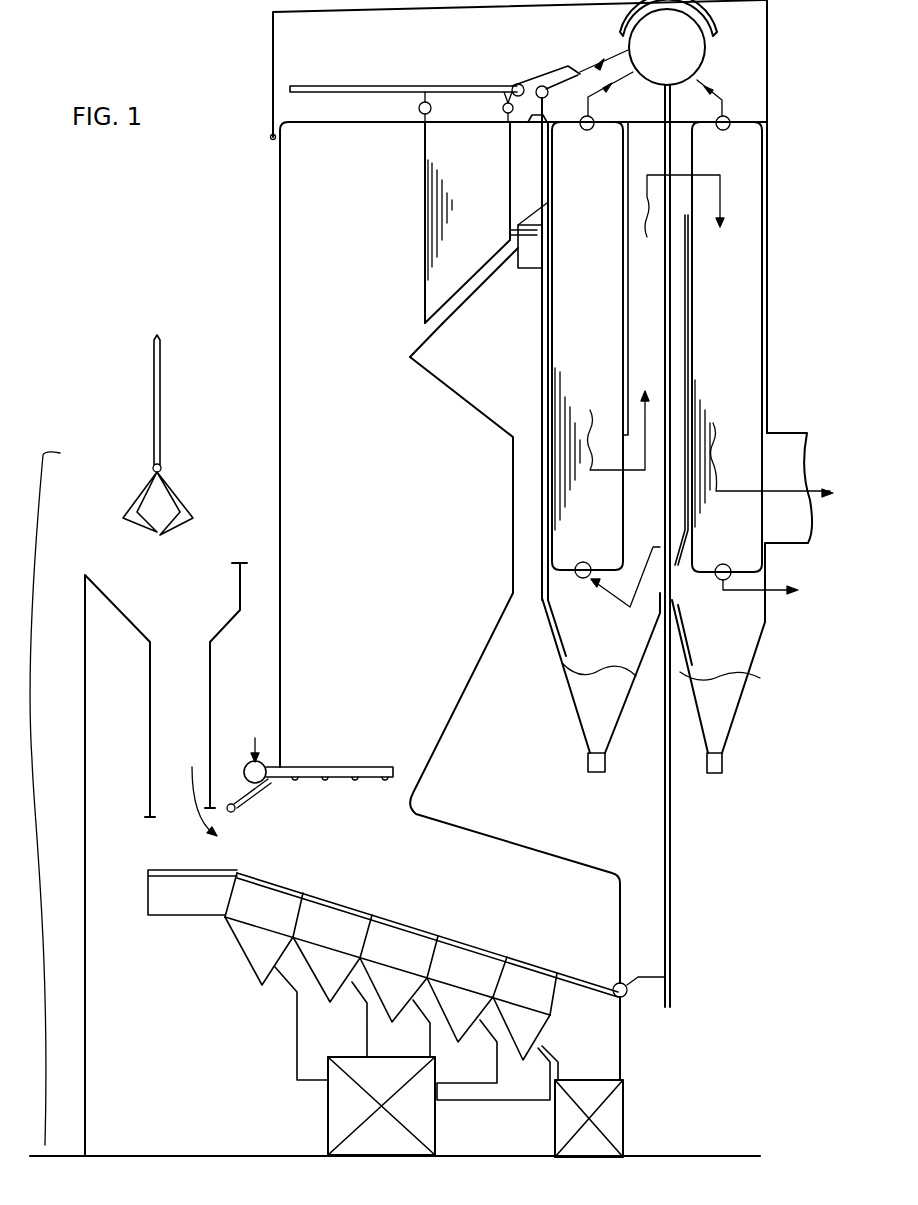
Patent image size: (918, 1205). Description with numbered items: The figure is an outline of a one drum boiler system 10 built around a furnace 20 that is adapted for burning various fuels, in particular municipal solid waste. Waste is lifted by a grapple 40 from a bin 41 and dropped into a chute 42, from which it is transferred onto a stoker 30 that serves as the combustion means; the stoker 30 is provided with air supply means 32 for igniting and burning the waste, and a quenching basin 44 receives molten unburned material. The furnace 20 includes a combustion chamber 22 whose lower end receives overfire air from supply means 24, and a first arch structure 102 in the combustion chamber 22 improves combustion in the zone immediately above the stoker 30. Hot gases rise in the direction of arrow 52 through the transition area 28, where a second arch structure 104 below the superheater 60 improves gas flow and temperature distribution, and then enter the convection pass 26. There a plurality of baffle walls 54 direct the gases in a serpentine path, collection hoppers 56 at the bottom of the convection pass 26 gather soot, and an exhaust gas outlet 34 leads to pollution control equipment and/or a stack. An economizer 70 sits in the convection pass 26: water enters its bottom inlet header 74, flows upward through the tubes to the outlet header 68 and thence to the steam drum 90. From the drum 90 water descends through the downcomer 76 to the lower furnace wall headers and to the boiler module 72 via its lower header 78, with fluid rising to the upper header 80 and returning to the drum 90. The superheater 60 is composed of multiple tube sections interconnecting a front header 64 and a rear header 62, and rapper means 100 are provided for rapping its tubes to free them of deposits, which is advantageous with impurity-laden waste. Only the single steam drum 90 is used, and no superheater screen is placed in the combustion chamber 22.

The one drum boiler system 10 is at (298, 48).
The furnace 20 is at (236, 262).
The combustion chamber 22 is at (380, 733).
The overfire air supply means 24 is at (393, 772).
The convection pass 26 is at (661, 364).
The transition area 28 is at (343, 192).
The stoker 30 is at (216, 934).
The air supply means 32 is at (335, 1095).
The exhaust gas outlet 34 is at (782, 432).
The grapple 40 is at (167, 487).
The bin 41 is at (61, 773).
The chute 42 is at (200, 733).
The quenching basin 44 is at (618, 1100).
The arrow 52 is at (410, 373).
The baffle walls 54 is at (631, 316).
The collection hoppers 56 is at (640, 703).
The superheater 60 is at (432, 240).
The rear header 62 is at (518, 84).
The front header 64 is at (428, 102).
The outlet header 68 is at (719, 132).
The economizer 70 is at (763, 205).
The boiler module 72 is at (602, 158).
The bottom inlet header 74 is at (717, 580).
The downcomer 76 is at (690, 398).
The lower header 78 is at (580, 578).
The upper header 80 is at (595, 116).
The steam drum 90 is at (700, 35).
The rapper means 100 is at (529, 268).
The first arch structure 102 is at (488, 643).
The second arch structure 104 is at (442, 316).